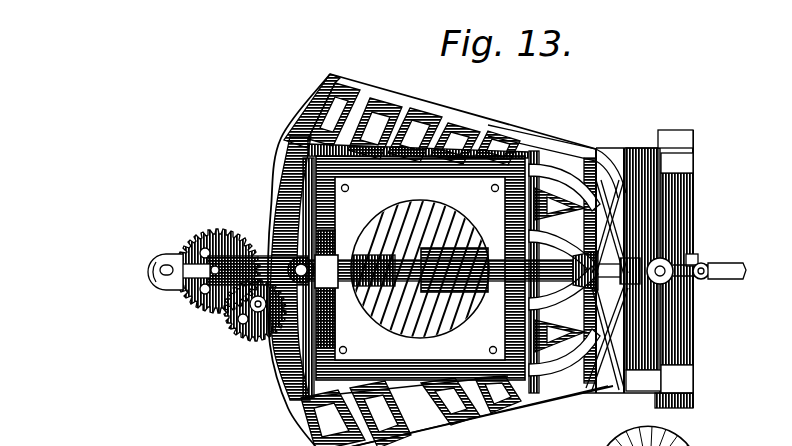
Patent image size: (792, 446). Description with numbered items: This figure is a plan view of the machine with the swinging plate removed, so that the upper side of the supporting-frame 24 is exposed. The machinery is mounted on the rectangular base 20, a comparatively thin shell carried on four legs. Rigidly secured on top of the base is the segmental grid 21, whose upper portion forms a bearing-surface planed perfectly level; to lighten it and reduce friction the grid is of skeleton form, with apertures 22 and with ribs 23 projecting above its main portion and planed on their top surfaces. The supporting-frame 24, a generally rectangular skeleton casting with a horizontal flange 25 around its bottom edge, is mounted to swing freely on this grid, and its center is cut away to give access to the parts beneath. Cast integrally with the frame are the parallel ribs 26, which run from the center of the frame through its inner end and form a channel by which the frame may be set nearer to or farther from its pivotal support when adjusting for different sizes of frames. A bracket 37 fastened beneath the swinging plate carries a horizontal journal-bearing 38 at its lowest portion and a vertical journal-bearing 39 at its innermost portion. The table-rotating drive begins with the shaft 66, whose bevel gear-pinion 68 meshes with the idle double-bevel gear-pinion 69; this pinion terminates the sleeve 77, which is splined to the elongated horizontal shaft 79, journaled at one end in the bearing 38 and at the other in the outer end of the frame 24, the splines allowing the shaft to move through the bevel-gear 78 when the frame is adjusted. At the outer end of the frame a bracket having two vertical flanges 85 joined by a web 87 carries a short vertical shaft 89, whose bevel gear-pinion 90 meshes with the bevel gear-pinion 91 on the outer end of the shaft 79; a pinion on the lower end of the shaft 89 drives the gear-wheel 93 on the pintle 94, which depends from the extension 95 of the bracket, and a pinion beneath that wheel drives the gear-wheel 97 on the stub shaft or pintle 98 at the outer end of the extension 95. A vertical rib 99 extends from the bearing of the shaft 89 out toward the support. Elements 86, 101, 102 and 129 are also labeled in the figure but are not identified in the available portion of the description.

The rectangular base 20 is at (598, 382).
The segmental grid 21 is at (498, 403).
The apertures 22 is at (430, 123).
The ribs 23 is at (300, 102).
The supporting-frame 24 is at (470, 165).
The horizontal flange 25 is at (520, 136).
The parallel ribs 26 is at (450, 250).
The bracket 37 is at (622, 278).
The horizontal journal-bearing 38 is at (650, 250).
The vertical journal-bearing 39 is at (690, 272).
The shaft 66 is at (684, 247).
The bevel gear-pinion 68 is at (592, 283).
The idle double-bevel gear-pinion 69 is at (540, 290).
The sleeve 77 is at (540, 238).
The bevel-gear 78 is at (598, 225).
The elongated horizontal shaft 79 is at (405, 250).
The vertical flanges 85 is at (337, 186).
The curved flange 86 is at (278, 216).
The web 87 is at (312, 282).
The short vertical shaft 89 is at (288, 250).
The bevel gear-pinion 90 is at (270, 266).
The bevel gear-pinion 91 is at (312, 224).
The gear-wheel 93 is at (235, 328).
The vertical bearing or pintle 94 is at (242, 302).
The extension 95 is at (230, 312).
The gear-wheel 97 is at (178, 290).
The stub shaft or pintle 98 is at (185, 240).
The vertical rib 99 is at (208, 257).
The knob slot 101 is at (156, 256).
The knob 102 is at (150, 276).
The handle 129 is at (722, 256).